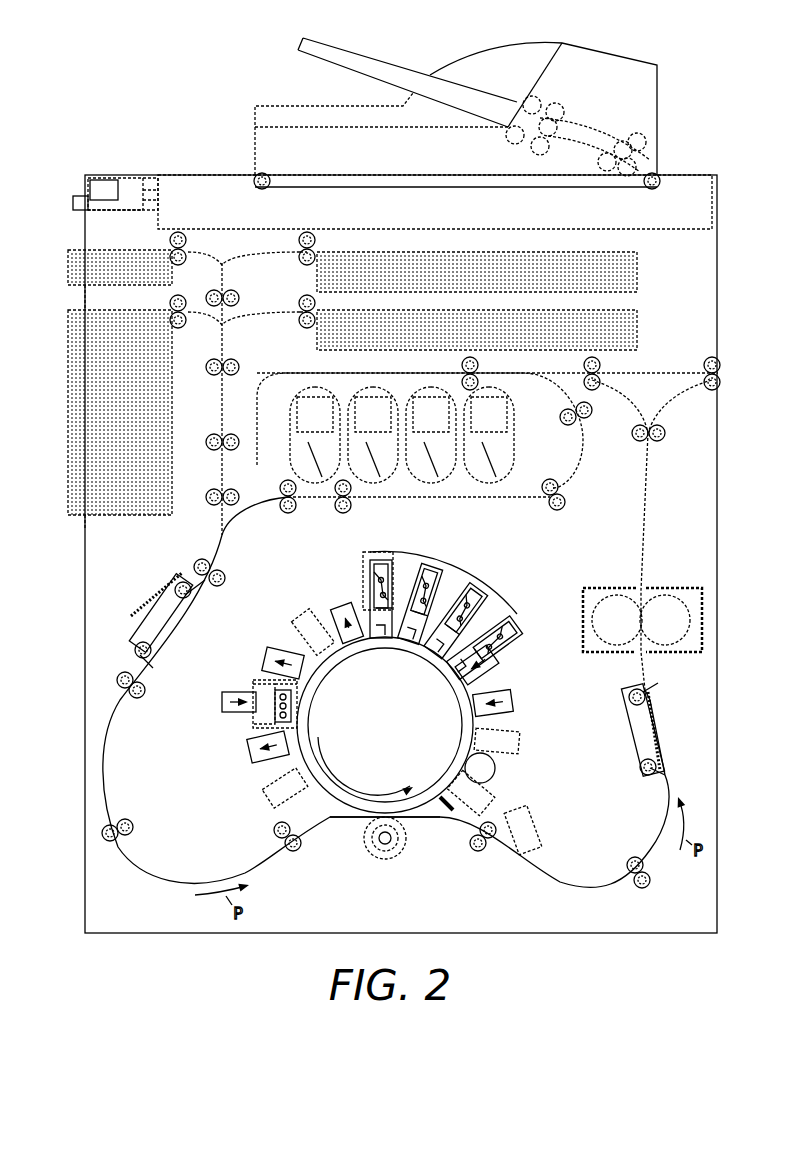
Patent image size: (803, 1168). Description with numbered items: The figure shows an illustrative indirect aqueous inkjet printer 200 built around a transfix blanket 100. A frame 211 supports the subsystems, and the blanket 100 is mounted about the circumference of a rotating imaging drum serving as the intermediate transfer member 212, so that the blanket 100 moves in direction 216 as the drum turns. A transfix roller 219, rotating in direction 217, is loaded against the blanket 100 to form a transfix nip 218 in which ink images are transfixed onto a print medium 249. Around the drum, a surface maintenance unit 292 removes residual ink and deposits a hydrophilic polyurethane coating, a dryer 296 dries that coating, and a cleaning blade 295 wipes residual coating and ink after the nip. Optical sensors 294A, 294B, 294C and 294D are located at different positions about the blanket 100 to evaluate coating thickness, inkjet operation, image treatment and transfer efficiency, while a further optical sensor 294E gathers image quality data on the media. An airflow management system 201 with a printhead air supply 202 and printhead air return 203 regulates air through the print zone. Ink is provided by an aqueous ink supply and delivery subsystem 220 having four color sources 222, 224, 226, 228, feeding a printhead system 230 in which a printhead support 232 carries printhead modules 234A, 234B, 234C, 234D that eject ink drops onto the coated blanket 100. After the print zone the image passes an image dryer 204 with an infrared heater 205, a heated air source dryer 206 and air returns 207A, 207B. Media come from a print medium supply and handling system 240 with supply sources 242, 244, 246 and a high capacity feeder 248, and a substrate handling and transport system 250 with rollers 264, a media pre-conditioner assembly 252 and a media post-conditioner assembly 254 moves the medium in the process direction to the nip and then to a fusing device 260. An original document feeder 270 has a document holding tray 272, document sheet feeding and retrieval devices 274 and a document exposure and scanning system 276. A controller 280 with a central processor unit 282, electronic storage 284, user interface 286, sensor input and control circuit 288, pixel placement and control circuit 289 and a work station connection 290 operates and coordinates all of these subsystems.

The transfix blanket 100 is at (427, 814).
The printer 200 is at (168, 66).
The airflow management system 201 is at (505, 648).
The printhead air supply 202 is at (495, 662).
The printhead air return 203 is at (343, 606).
The image dryer 204 is at (246, 684).
The infrared heater 205 is at (255, 722).
The dryer 206 is at (222, 701).
The air return 207A is at (281, 650).
The air return 207B is at (249, 745).
The frame 211 is at (85, 600).
The intermediate transfer member 212 is at (372, 710).
The direction 216 is at (338, 762).
The direction 217 is at (382, 860).
The transfix nip 218 is at (360, 838).
The transfix roller 219 is at (404, 858).
The aqueous ink supply and delivery subsystem 220 is at (423, 428).
The ink source 222 is at (302, 425).
The ink source 224 is at (360, 425).
The ink source 226 is at (418, 425).
The ink source 228 is at (476, 425).
The printhead system 230 is at (419, 600).
The printhead support 232 is at (375, 550).
The printhead module 234A is at (392, 562).
The printhead module 234B is at (430, 578).
The printhead module 234C is at (473, 595).
The printhead module 234D is at (500, 612).
The print medium supply and handling system 240 is at (64, 384).
The substrate supply source 242 is at (637, 272).
The substrate supply source 244 is at (637, 330).
The substrate supply source 246 is at (68, 288).
The supply source 248 is at (120, 515).
The print medium 249 is at (340, 818).
The substrate handling and transport system 250 is at (103, 766).
The media pre-conditioner assembly 252 is at (152, 612).
The media post-conditioner assembly 254 is at (660, 720).
The fusing device 260 is at (606, 587).
The rollers 264 is at (664, 436).
The original document feeder 270 is at (280, 98).
The document holding tray 272 is at (345, 45).
The document sheet feeding and retrieval devices 274 is at (598, 126).
The document exposure and scanning system 276 is at (480, 190).
The controller 280 is at (125, 186).
The central processor unit 282 is at (95, 177).
The electronic storage 284 is at (135, 211).
The user interface 286 is at (138, 178).
The sensor input and control circuit 288 is at (152, 182).
The pixel placement and control circuit 289 is at (160, 202).
The work station connection 290 is at (73, 203).
The surface maintenance unit 292 is at (496, 768).
The optical sensor 294A is at (520, 738).
The optical sensor 294B is at (300, 615).
The optical sensor 294C is at (265, 796).
The optical sensor 294D is at (500, 800).
The optical sensor 294E is at (535, 832).
The cleaning blade 295 is at (444, 812).
The dryer 296 is at (512, 700).